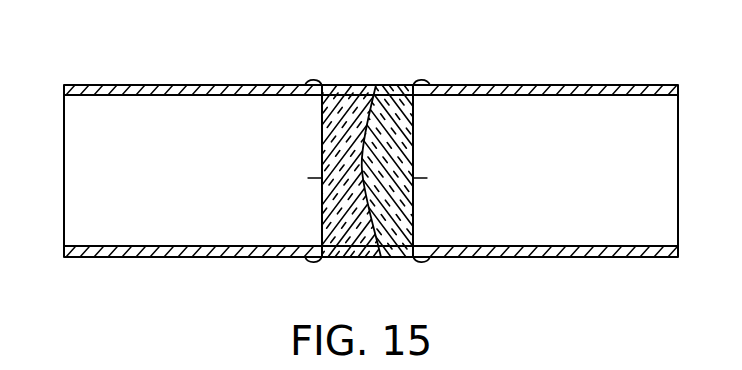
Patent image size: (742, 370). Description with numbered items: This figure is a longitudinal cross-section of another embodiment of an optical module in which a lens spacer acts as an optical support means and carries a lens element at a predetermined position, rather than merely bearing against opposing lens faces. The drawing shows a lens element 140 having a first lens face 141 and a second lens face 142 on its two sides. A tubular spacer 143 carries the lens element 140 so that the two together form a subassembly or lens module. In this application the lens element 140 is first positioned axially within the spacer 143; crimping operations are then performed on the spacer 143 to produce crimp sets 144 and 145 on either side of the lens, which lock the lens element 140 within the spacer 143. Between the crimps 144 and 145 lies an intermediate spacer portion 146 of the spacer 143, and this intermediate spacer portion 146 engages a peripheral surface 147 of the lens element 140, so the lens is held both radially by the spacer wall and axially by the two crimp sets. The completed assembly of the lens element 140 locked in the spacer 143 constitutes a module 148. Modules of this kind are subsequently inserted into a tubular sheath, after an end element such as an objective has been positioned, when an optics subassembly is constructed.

The lens element 140 is at (370, 148).
The first lens face 141 is at (322, 194).
The second lens face 142 is at (413, 195).
The spacer 143 is at (600, 85).
The crimp set 144 is at (313, 84).
The crimp set 145 is at (423, 84).
The intermediate spacer portion 146 is at (359, 85).
The peripheral surface 147 is at (350, 259).
The module 148 is at (575, 258).